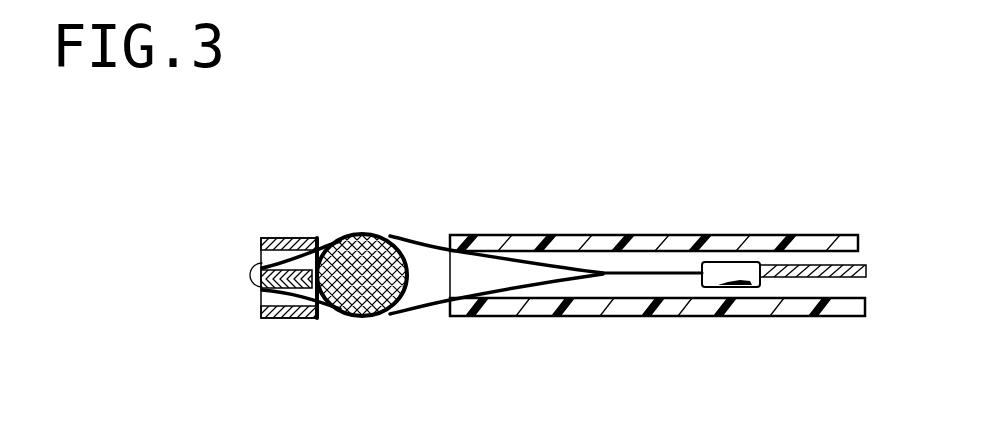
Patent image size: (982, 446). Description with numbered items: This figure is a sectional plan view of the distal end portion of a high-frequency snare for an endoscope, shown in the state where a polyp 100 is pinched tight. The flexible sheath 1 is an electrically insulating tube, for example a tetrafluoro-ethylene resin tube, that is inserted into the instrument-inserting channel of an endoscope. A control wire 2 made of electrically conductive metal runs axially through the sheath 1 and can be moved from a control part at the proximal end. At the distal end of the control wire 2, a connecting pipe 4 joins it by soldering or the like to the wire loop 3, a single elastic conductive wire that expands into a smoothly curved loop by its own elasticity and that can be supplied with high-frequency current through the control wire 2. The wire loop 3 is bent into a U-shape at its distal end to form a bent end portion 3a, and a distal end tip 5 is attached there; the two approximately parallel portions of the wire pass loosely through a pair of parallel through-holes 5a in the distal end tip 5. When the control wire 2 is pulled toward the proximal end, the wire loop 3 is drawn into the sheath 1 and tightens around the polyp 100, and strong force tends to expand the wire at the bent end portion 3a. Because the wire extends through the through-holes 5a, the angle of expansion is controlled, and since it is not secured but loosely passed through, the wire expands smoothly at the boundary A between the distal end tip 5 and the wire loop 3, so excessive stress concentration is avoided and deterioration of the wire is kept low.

The sheath 1 is at (616, 236).
The control wire 2 is at (825, 268).
The wire loop 3 is at (412, 240).
The bent end portion 3a is at (250, 282).
The connecting pipe 4 is at (738, 288).
The distal end tip 5 is at (253, 320).
The through-holes 5a is at (280, 247).
The polyp 100 is at (358, 295).
The boundary A is at (323, 232).